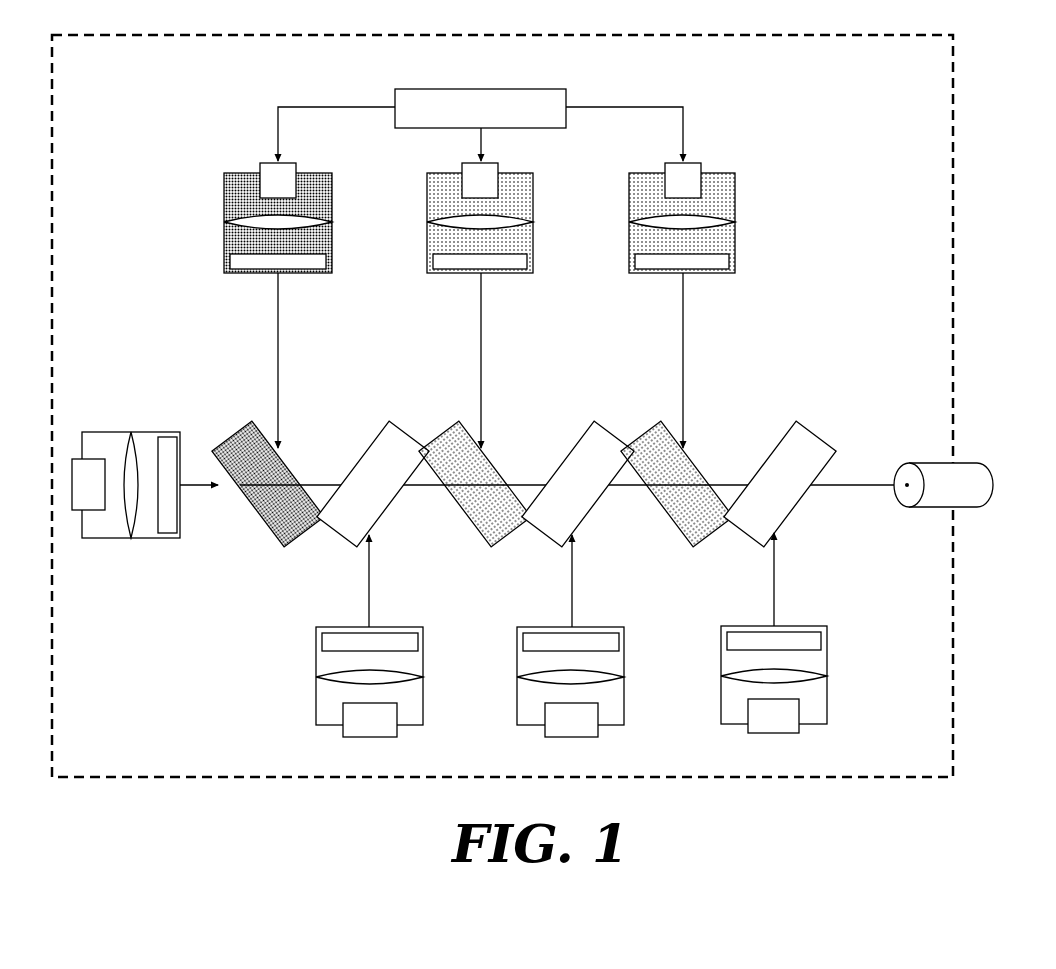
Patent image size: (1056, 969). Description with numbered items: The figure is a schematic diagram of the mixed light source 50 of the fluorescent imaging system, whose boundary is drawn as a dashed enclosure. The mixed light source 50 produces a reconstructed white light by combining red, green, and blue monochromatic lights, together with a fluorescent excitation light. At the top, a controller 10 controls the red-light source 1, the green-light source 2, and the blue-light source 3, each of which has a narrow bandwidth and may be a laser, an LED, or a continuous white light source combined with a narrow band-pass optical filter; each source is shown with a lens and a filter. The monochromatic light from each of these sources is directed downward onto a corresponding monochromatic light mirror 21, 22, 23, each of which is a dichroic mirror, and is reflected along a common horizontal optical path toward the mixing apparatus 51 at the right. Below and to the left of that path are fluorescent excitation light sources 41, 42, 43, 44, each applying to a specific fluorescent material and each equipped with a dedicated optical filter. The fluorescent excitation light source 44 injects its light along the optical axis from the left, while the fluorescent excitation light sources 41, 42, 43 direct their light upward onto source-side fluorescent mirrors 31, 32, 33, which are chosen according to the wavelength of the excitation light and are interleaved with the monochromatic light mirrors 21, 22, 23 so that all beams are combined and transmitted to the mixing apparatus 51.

The controller 10 is at (480, 88).
The red-light source 1 is at (243, 275).
The green-light source 2 is at (445, 275).
The blue-light source 3 is at (647, 275).
The monochromatic light mirror 21 is at (275, 540).
The monochromatic light mirror 22 is at (485, 540).
The monochromatic light mirror 23 is at (687, 540).
The source-side fluorescent mirror 31 is at (398, 420).
The source-side fluorescent mirror 32 is at (601, 420).
The source-side fluorescent mirror 33 is at (800, 418).
The fluorescent excitation light source 41 is at (812, 727).
The fluorescent excitation light source 42 is at (611, 727).
The fluorescent excitation light source 43 is at (408, 727).
The fluorescent excitation light source 44 is at (107, 432).
The mixed light source 50 is at (958, 276).
The mixing apparatus 51 is at (993, 484).